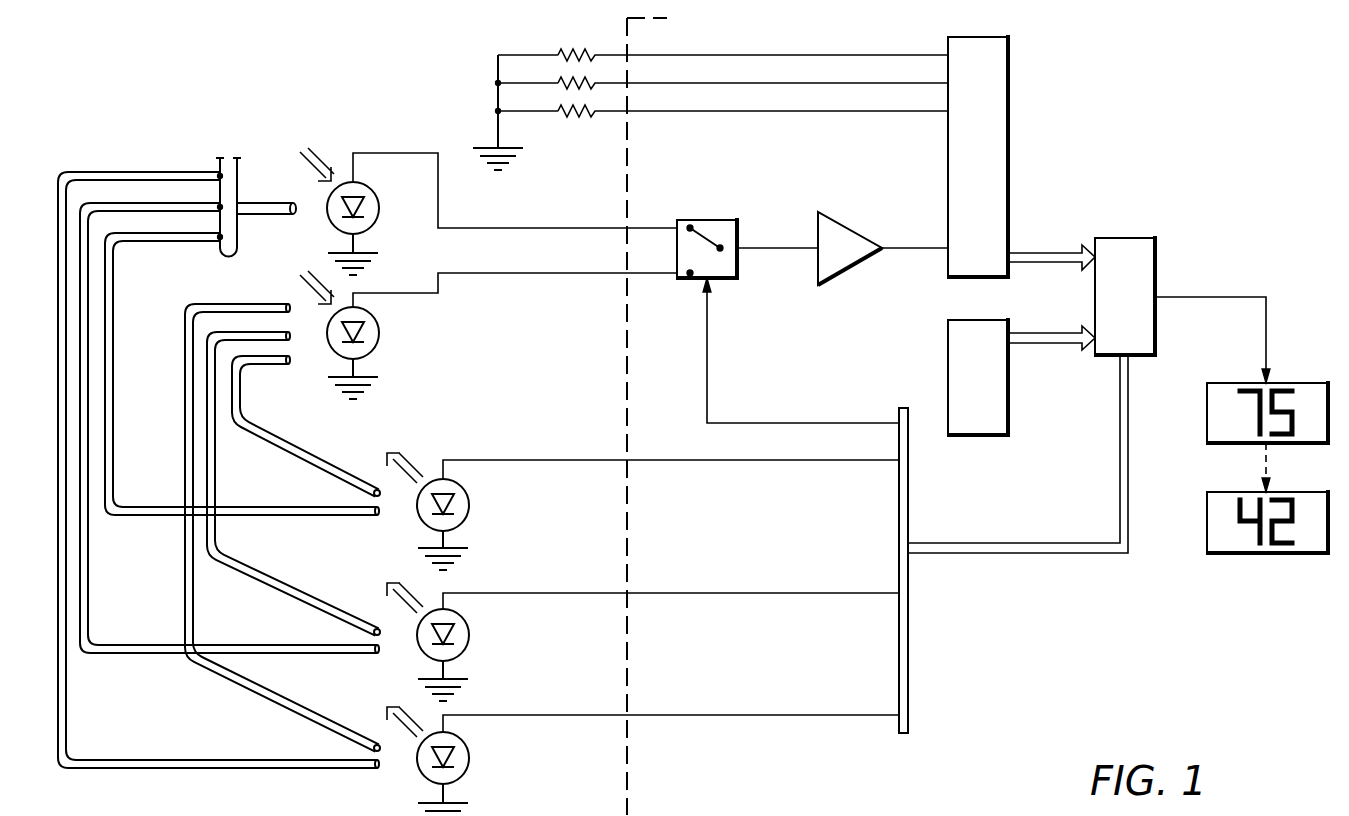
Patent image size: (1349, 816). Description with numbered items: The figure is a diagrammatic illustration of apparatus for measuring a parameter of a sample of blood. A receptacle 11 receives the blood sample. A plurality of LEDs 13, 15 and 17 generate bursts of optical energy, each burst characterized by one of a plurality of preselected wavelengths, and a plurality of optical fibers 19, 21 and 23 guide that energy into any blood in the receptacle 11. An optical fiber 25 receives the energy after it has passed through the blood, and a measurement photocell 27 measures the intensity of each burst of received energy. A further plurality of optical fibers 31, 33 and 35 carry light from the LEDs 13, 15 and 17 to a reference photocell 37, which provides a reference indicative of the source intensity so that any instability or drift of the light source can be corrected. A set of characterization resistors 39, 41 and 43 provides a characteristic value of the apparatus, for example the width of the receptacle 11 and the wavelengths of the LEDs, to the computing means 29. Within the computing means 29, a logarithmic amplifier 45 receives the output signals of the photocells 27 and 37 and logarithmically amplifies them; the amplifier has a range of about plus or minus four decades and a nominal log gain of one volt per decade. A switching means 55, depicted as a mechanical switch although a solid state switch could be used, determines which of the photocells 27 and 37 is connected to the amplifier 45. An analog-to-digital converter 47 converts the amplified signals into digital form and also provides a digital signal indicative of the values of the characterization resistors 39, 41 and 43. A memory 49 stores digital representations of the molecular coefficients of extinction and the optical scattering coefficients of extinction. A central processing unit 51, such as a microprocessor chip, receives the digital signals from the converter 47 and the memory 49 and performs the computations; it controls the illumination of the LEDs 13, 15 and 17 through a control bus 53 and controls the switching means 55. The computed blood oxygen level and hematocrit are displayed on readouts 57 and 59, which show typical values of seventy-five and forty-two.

The receptacle 11 is at (231, 153).
The LED 13 is at (470, 502).
The LED 15 is at (470, 633).
The LED 17 is at (470, 763).
The optical fiber 19 is at (330, 515).
The optical fiber 21 is at (266, 648).
The optical fiber 23 is at (327, 768).
The optical fiber 25 is at (281, 216).
The measurement photocell 27 is at (378, 199).
The computing means 29 is at (1023, 596).
The optical fiber 31 is at (317, 460).
The optical fiber 33 is at (330, 602).
The optical fiber 35 is at (305, 708).
The reference photocell 37 is at (379, 340).
The characterization resistor 39 is at (563, 50).
The characterization resistor 41 is at (593, 88).
The characterization resistor 43 is at (562, 117).
The logarithmic amplifier 45 is at (858, 230).
The analog-to-digital converter 47 is at (1008, 120).
The memory 49 is at (972, 437).
The central processing unit 51 is at (1155, 265).
The control bus 53 is at (908, 660).
The switching means 55 is at (712, 214).
The readout 57 is at (1296, 383).
The readout 59 is at (1300, 492).